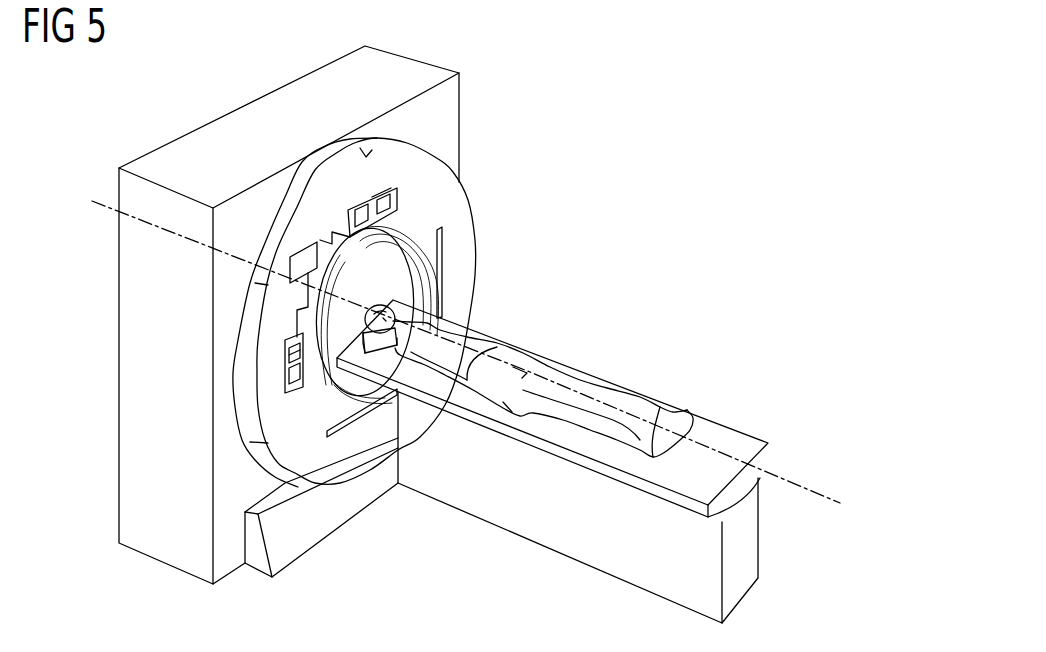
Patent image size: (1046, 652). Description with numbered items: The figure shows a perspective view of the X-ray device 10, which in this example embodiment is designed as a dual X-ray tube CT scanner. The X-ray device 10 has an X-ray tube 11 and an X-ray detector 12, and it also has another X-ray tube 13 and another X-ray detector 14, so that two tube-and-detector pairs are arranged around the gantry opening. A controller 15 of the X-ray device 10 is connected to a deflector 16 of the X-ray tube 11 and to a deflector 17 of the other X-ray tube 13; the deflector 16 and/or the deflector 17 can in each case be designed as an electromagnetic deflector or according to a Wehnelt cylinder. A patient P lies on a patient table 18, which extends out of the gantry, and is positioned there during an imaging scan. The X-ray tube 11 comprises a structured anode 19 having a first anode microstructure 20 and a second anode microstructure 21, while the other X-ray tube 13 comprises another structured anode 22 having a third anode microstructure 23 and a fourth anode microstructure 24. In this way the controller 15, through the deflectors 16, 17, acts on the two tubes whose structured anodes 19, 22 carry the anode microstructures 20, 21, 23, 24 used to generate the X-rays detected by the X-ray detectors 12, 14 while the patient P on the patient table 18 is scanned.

The X-ray device 10 is at (627, 84).
The X-ray tube 11 is at (402, 200).
The X-ray detector 12 is at (360, 415).
The other X-ray tube 13 is at (295, 393).
The other X-ray detector 14 is at (442, 256).
The controller 15 is at (310, 207).
The deflector 16 is at (358, 200).
The deflector 17 is at (287, 348).
The patient table 18 is at (583, 548).
The structured anode 19 is at (394, 190).
The first anode microstructure 20 is at (383, 204).
The second anode microstructure 21 is at (381, 192).
The other structured anode 22 is at (286, 377).
The third anode microstructure 23 is at (294, 373).
The fourth anode microstructure 24 is at (294, 352).
The patient P is at (603, 398).